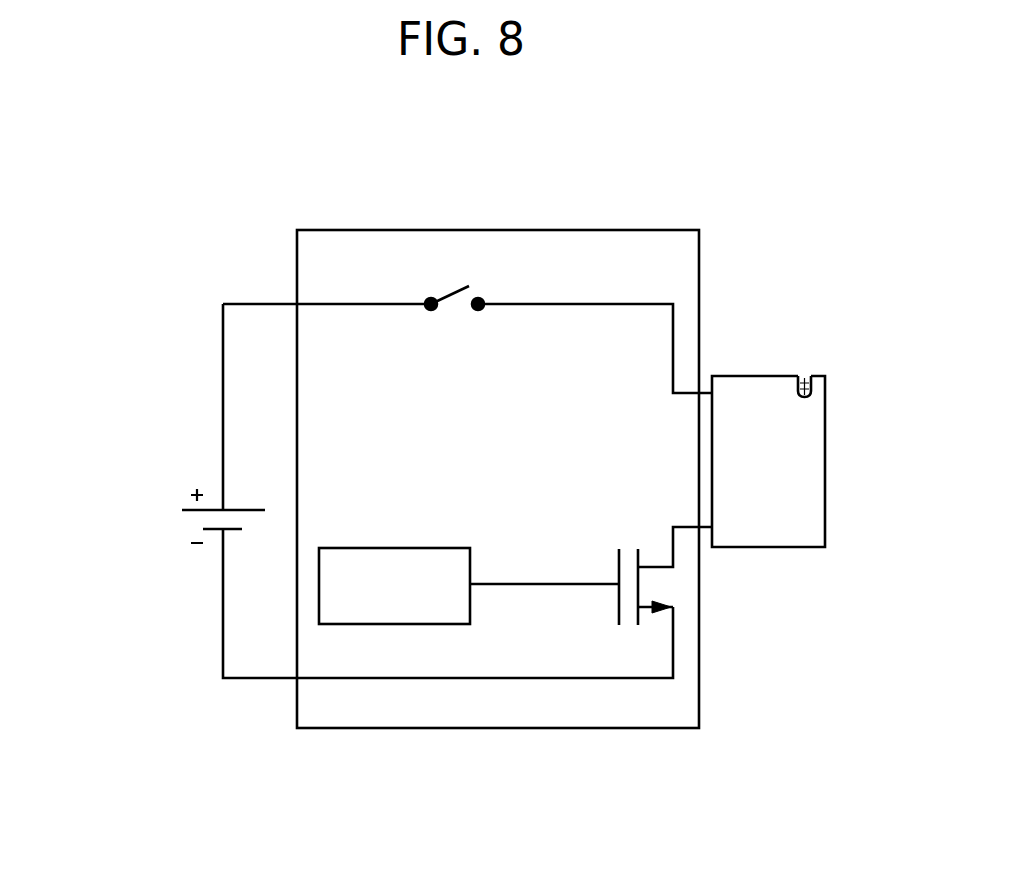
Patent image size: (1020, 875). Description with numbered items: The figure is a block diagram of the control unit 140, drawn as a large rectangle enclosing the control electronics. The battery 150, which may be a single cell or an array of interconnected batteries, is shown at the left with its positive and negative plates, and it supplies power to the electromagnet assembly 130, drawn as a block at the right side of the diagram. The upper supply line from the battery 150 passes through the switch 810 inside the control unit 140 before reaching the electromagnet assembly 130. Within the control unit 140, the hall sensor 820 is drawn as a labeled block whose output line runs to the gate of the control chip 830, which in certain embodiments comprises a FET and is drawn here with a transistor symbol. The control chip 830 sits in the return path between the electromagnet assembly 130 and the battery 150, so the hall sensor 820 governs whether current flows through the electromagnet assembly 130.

The control unit 140 is at (527, 740).
The switch 810 is at (456, 292).
The battery 150 is at (252, 508).
The hall sensor 820 is at (446, 548).
The control chip 830 is at (619, 613).
The electromagnet assembly 130 is at (825, 457).